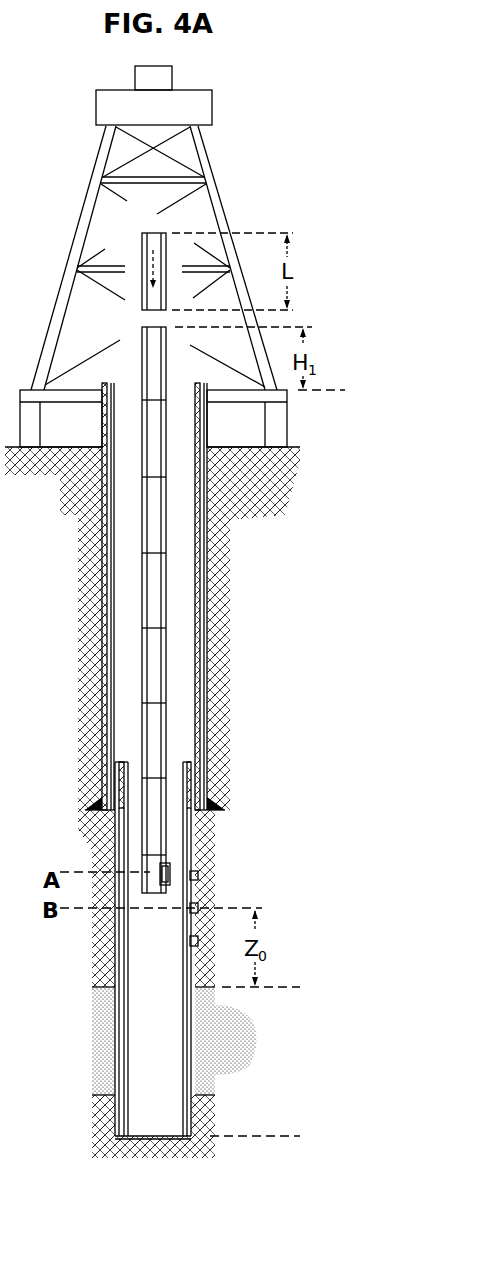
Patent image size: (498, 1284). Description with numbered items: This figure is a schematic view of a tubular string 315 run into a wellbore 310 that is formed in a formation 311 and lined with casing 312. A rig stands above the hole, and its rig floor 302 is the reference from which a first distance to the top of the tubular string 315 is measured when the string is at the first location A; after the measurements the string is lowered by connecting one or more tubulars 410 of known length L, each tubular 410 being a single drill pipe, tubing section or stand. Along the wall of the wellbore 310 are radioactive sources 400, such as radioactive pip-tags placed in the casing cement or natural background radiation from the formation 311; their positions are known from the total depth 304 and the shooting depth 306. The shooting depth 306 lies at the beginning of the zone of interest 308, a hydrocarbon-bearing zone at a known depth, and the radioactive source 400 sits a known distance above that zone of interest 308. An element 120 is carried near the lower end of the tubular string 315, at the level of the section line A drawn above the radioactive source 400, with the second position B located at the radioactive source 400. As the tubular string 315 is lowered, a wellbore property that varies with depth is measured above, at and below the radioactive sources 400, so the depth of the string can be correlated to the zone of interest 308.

The tubular 410 is at (141, 257).
The rig floor 302 is at (318, 389).
The formation 311 is at (263, 499).
The casing 312 is at (100, 548).
The wellbore 310 is at (125, 652).
The tubular string 315 is at (176, 576).
The downhole tool 120 is at (171, 871).
The radioactive source 400 is at (199, 941).
The shooting depth 306 is at (273, 989).
The zone of interest 308 is at (240, 1054).
The total depth 304 is at (275, 1135).